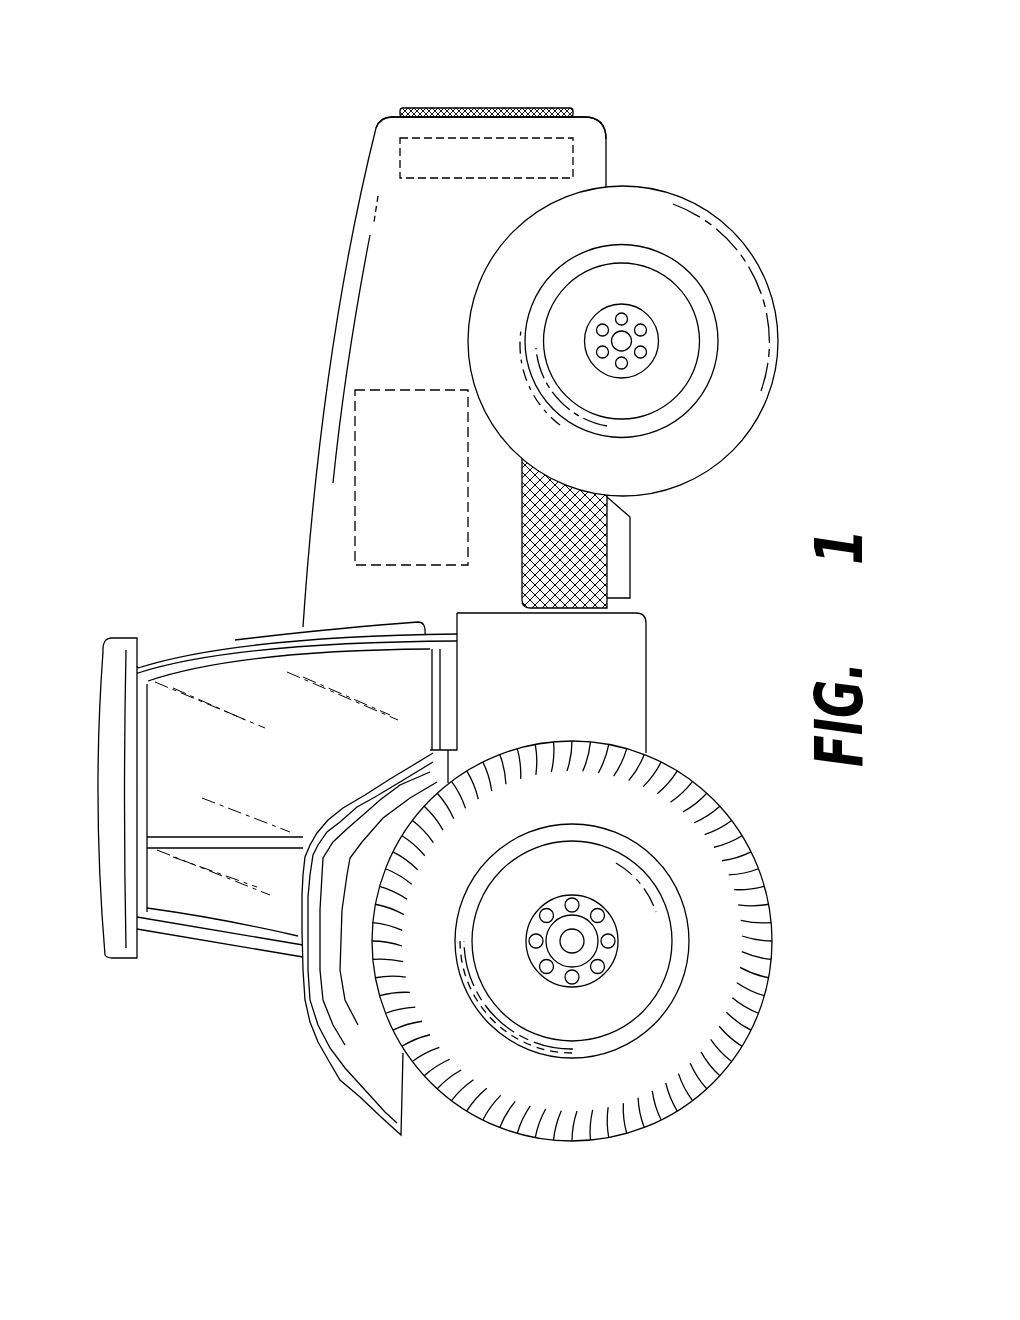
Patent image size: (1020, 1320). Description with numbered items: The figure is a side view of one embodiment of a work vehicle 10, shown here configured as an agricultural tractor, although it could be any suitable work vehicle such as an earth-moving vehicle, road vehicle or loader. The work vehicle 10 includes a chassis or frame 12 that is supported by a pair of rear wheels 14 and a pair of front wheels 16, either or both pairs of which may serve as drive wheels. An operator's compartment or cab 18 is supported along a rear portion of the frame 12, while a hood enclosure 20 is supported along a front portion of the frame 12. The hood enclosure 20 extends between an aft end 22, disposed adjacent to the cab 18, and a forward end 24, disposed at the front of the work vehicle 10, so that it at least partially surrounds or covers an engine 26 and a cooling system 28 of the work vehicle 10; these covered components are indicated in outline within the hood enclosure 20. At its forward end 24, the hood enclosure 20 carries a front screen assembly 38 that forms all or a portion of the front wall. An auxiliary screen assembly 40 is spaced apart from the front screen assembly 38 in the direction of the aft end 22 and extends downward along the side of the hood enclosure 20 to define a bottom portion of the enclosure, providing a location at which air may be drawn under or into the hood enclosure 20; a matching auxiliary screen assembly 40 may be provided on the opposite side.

The work vehicle 10 is at (206, 208).
The chassis or frame 12 is at (647, 707).
The rear wheels 14 is at (698, 203).
The front wheels 16 is at (610, 1142).
The operator's compartment or cab 18 is at (243, 905).
The hood enclosure 20 is at (380, 277).
The aft end 22 is at (300, 628).
The forward end 24 is at (385, 122).
The engine 26 is at (353, 532).
The cooling system 28 is at (542, 138).
The front screen assembly 38 is at (488, 96).
The auxiliary screen assembly 40 is at (590, 546).